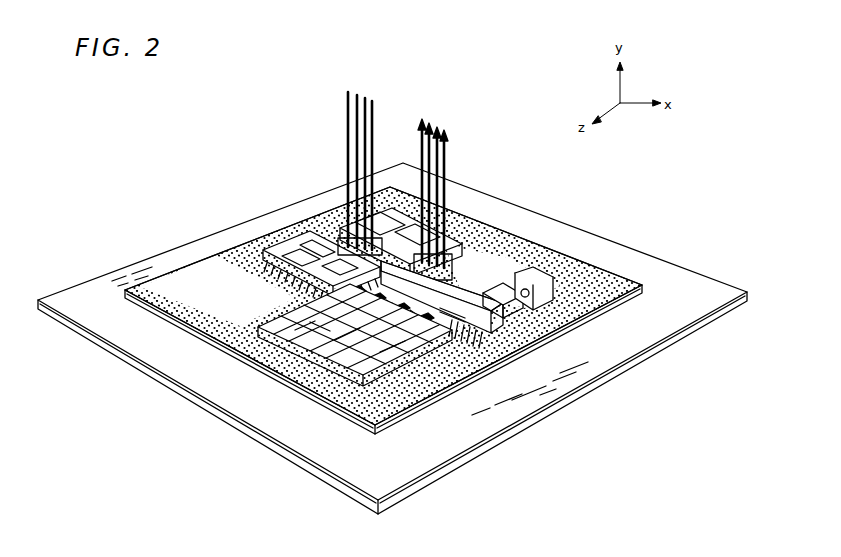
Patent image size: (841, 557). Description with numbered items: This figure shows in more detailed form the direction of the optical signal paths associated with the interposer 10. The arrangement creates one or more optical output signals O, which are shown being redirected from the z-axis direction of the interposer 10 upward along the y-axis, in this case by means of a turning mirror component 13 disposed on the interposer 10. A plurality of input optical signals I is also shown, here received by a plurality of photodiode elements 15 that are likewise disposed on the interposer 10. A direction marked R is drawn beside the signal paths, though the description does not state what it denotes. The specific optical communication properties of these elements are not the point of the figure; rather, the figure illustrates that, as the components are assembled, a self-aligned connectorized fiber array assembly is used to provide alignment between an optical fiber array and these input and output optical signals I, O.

The interposer 10 is at (630, 277).
The turning mirror component 13 is at (470, 276).
The photodiode elements 15 is at (346, 238).
The input optical signals I is at (345, 107).
The optical output signals O is at (450, 152).
The direction of light / ray R is at (326, 157).